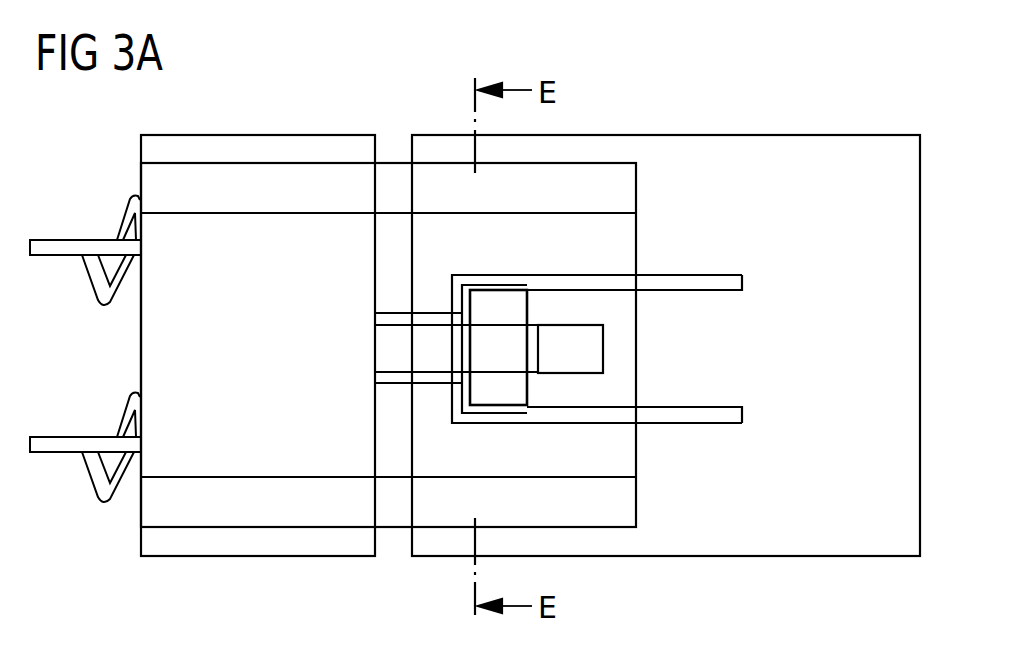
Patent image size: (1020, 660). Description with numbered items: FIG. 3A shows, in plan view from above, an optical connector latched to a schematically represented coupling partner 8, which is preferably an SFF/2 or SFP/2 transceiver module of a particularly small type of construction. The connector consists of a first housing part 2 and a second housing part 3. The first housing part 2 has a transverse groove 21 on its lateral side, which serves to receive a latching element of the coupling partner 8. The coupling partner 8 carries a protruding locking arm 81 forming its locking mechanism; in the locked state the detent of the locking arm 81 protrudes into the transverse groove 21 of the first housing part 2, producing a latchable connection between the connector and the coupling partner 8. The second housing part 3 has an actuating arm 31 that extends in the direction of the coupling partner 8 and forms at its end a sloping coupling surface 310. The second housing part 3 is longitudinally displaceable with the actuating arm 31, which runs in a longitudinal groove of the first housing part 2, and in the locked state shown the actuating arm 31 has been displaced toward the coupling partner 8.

The first housing part 2 is at (313, 490).
The second housing part 3 is at (255, 543).
The coupling partner 8 is at (800, 148).
The locking arm 81 is at (575, 300).
The transverse groove 21 is at (505, 283).
The actuating arm 31 is at (390, 347).
The sloping coupling surface 310 is at (587, 348).